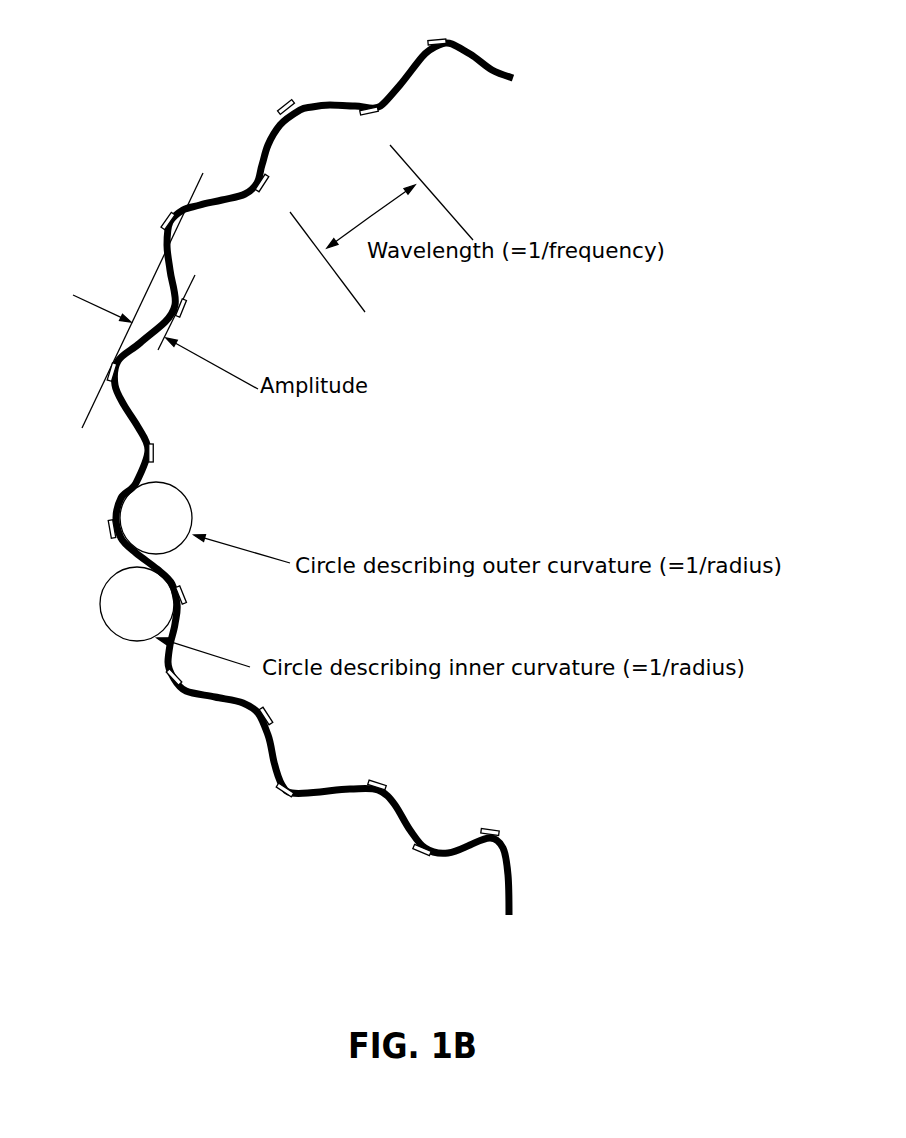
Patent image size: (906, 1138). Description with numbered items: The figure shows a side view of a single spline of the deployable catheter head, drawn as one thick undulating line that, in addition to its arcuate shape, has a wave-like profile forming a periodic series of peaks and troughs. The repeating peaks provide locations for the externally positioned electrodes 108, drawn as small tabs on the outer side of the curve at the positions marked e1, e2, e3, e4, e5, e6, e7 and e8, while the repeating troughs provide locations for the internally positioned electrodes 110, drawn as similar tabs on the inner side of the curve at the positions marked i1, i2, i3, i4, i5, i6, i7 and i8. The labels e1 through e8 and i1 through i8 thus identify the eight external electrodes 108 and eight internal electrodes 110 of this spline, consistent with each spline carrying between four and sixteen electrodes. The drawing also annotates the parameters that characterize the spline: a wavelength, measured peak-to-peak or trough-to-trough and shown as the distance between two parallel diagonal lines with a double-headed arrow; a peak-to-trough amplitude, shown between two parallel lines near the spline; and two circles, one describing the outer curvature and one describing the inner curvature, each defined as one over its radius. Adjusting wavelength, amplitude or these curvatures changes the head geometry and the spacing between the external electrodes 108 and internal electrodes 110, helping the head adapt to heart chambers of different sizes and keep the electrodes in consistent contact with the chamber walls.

The externally positioned electrodes 108 is at (291, 459).
The internally positioned electrodes 110 is at (361, 473).
The first extremum e1 is at (433, 29).
The second extremum e2 is at (279, 96).
The third extremum e3 is at (159, 209).
The fourth extremum e4 is at (95, 366).
The fifth extremum e5 is at (93, 531).
The sixth extremum e6 is at (161, 684).
The seventh extremum e7 is at (275, 801).
The eighth extremum e8 is at (413, 862).
The first inflection point i1 is at (373, 122).
The second inflection point i2 is at (272, 190).
The third inflection point i3 is at (188, 314).
The fourth inflection point i4 is at (165, 455).
The fifth inflection point i5 is at (191, 595).
The sixth inflection point i6 is at (275, 713).
The seventh inflection point i7 is at (382, 776).
The eighth inflection point i8 is at (491, 818).